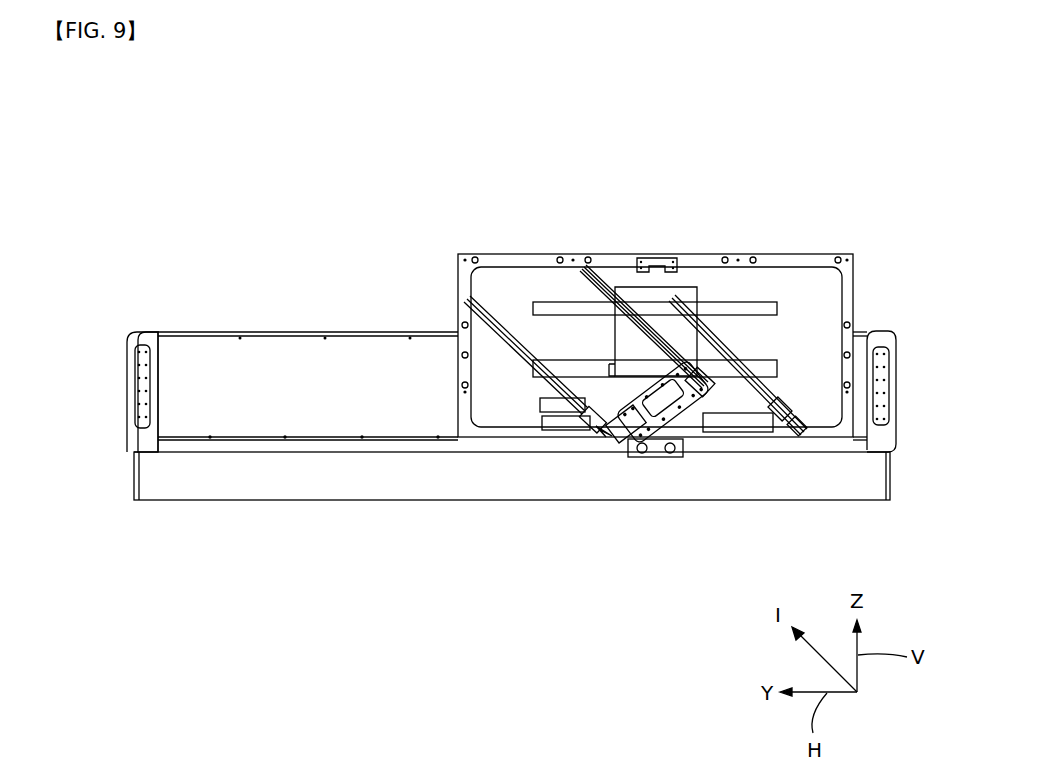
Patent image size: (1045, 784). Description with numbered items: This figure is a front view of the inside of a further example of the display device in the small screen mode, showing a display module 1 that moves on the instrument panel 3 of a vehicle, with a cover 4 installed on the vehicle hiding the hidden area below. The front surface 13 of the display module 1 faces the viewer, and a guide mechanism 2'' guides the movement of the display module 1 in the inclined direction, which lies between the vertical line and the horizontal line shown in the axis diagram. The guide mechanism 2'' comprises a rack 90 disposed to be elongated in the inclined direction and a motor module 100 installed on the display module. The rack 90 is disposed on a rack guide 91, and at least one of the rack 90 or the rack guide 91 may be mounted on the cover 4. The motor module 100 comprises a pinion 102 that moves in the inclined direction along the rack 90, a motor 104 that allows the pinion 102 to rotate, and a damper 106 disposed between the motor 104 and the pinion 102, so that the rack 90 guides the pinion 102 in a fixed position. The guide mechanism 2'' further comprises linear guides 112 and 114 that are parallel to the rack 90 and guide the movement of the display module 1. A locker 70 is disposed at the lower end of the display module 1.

The display module 1 is at (847, 216).
The guide mechanism 2'' is at (655, 297).
The instrument panel 3 is at (868, 330).
The cover 4 is at (181, 484).
The front surface 13 is at (806, 293).
The locker 70 is at (632, 457).
The rack 90 is at (597, 268).
The rack guide 91 is at (618, 288).
The motor module 100 is at (600, 432).
The pinion 102 is at (696, 418).
The motor 104 is at (618, 433).
The damper 106 is at (656, 437).
The linear guide 112 is at (528, 365).
The linear guide 114 is at (757, 396).